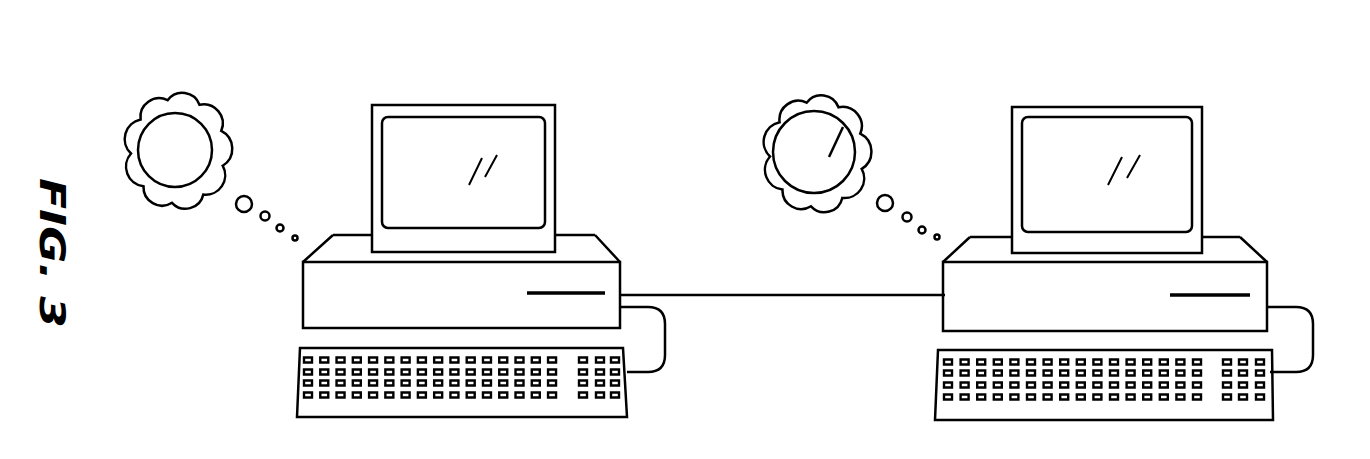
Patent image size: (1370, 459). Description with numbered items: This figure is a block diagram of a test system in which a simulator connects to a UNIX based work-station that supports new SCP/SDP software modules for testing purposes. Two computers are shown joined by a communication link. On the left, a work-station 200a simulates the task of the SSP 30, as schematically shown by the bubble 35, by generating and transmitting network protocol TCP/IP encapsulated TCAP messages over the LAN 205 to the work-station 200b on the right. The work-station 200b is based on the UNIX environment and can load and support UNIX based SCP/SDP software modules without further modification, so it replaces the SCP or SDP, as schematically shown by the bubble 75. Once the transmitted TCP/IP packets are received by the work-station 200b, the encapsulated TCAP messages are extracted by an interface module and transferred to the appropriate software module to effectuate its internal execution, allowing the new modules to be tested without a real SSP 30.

The SSP 30 is at (170, 113).
The bubble 35 is at (223, 103).
The bubble 75 is at (870, 143).
The work-station 200a is at (613, 247).
The work-station 200b is at (1258, 250).
The LAN 205 is at (752, 293).